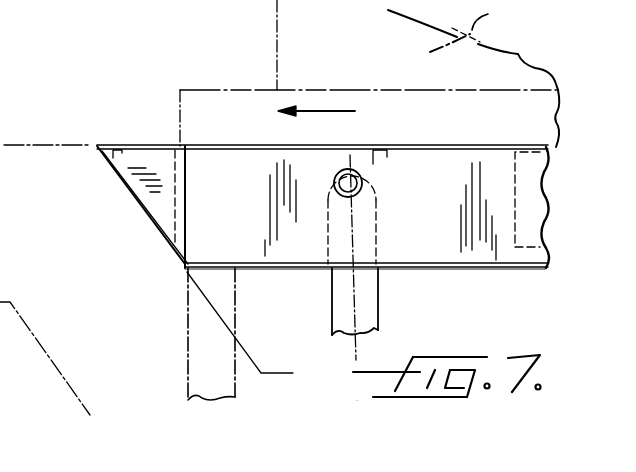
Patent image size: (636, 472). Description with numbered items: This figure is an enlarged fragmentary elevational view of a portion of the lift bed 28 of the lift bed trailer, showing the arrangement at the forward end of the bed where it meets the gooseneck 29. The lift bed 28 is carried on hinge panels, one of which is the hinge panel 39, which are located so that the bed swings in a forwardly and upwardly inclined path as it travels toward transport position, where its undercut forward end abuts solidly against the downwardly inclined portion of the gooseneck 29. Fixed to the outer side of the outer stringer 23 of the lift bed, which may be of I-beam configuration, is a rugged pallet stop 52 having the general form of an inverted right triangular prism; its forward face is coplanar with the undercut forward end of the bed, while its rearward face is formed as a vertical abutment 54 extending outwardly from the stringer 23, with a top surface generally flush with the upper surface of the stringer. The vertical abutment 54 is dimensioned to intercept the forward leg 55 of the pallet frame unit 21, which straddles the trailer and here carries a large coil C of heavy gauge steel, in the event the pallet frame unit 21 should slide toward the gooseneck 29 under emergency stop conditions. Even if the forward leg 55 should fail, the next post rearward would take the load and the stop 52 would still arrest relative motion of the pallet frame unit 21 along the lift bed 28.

The pallet frame unit 21 is at (216, 89).
The outer stringer of the lift bed 23 is at (548, 230).
The lift bed 28 is at (527, 270).
The gooseneck 29 is at (22, 178).
The hinge panel 39 is at (370, 300).
The pallet stop 52 is at (137, 160).
The vertical abutment 54 is at (190, 172).
The forward leg 55 is at (188, 341).
The coil C is at (417, 180).